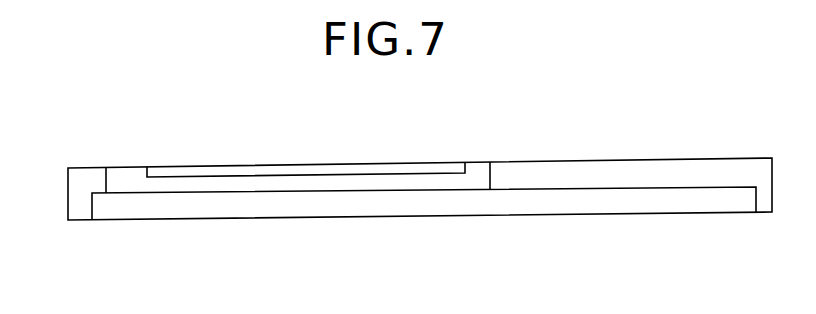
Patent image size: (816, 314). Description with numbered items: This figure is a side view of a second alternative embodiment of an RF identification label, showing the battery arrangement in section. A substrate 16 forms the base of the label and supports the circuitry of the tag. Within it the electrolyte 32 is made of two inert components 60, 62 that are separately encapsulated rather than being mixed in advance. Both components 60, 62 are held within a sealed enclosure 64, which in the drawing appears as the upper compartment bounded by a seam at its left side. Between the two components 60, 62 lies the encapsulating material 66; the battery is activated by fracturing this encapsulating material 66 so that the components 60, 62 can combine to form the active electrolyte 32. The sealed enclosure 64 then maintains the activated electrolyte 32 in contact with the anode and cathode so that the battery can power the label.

The substrate 16 is at (398, 205).
The electrolyte 32 is at (138, 166).
The inert component 60 is at (181, 170).
The inert component 62 is at (368, 183).
The sealed enclosure 64 is at (105, 167).
The encapsulating material 66 is at (300, 175).